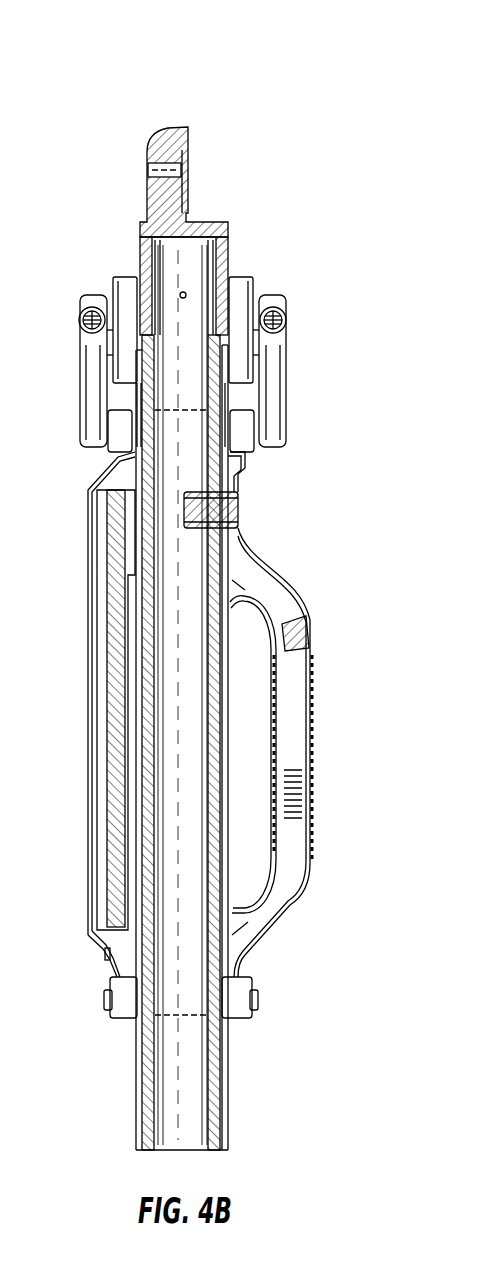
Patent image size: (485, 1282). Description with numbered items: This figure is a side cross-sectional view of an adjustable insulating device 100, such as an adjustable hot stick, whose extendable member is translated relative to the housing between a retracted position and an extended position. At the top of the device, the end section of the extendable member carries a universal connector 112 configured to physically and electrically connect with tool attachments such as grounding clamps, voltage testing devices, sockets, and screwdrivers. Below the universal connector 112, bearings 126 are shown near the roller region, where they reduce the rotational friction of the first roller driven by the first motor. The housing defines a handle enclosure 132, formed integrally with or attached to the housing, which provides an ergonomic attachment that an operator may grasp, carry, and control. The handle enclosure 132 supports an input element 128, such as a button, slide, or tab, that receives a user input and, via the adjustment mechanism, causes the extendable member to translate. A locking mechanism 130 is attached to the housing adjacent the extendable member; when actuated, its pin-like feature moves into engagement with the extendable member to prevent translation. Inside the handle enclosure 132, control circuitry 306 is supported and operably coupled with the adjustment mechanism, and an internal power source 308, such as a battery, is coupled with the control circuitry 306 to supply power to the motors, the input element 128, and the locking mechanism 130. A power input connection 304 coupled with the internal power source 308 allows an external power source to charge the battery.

The adjustable insulating device 100 is at (282, 147).
The universal connector 112 is at (130, 159).
The bearings 126 is at (121, 324).
The input element 128 is at (321, 636).
The locking mechanism 130 is at (258, 512).
The handle enclosure 132 is at (323, 770).
The power input connection 304 is at (105, 953).
The control circuitry 306 is at (130, 593).
The internal power source 308 is at (110, 637).